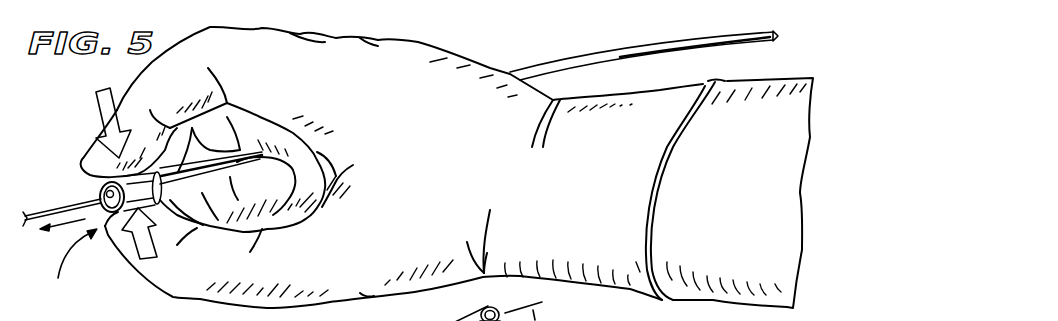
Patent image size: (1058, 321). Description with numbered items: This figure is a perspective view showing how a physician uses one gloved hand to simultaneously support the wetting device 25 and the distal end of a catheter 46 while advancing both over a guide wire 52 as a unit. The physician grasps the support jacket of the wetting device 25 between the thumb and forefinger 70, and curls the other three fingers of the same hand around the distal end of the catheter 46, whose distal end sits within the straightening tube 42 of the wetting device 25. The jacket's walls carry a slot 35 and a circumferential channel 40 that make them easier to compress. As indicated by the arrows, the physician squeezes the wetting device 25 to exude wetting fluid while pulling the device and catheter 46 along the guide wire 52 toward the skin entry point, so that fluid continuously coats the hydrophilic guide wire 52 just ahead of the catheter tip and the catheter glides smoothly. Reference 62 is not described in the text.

The wetting device 25 is at (69, 267).
The slot 35 is at (97, 0).
The circumferential channel 40 is at (320, 0).
The straightening tube 42 is at (471, 311).
The catheter 46 is at (603, 47).
The guide wire 52 is at (72, 205).
The fist grip 62 is at (160, 280).
The forefinger 70 is at (84, 157).